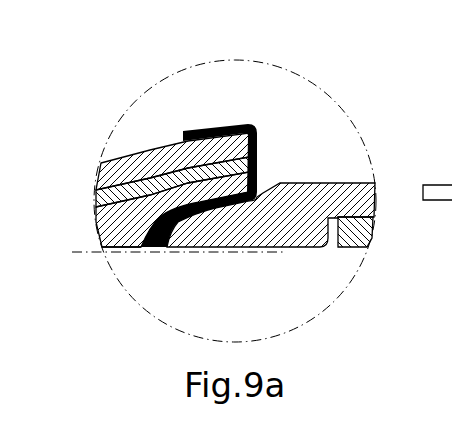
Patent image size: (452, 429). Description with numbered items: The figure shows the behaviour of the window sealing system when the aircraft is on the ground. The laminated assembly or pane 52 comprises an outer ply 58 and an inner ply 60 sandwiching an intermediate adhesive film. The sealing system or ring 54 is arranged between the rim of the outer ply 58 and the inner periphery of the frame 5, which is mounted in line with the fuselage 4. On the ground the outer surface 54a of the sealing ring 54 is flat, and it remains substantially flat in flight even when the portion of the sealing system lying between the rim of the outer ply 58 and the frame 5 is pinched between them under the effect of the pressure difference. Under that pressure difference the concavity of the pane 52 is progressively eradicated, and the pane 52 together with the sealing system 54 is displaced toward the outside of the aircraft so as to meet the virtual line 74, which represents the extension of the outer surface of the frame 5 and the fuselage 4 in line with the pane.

The fuselage 4 is at (375, 218).
The frame 5 is at (311, 183).
The laminated assembly 52 is at (226, 179).
The sealing system 54 is at (258, 143).
The outer surface of the sealing system 54a is at (157, 247).
The outer ply 58 is at (118, 246).
The inner ply 60 is at (100, 166).
The virtual line 74 is at (76, 252).